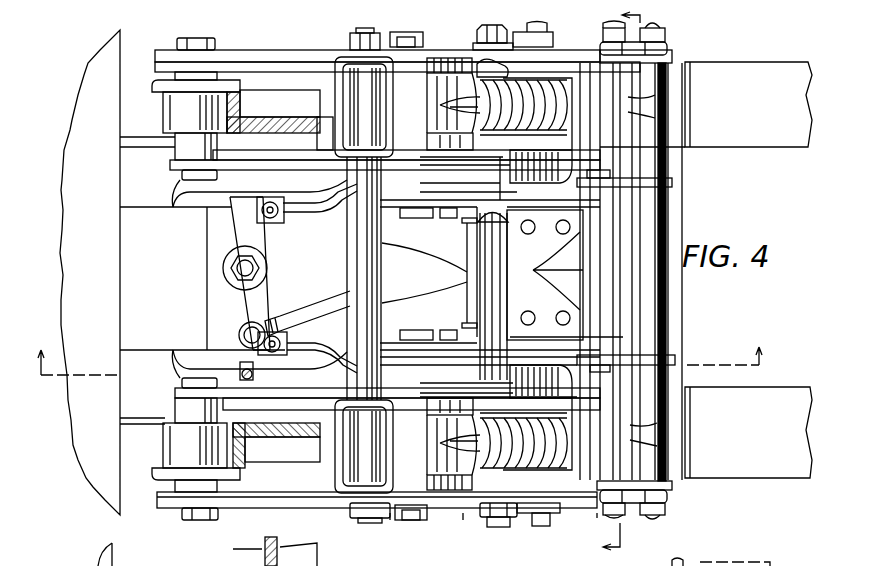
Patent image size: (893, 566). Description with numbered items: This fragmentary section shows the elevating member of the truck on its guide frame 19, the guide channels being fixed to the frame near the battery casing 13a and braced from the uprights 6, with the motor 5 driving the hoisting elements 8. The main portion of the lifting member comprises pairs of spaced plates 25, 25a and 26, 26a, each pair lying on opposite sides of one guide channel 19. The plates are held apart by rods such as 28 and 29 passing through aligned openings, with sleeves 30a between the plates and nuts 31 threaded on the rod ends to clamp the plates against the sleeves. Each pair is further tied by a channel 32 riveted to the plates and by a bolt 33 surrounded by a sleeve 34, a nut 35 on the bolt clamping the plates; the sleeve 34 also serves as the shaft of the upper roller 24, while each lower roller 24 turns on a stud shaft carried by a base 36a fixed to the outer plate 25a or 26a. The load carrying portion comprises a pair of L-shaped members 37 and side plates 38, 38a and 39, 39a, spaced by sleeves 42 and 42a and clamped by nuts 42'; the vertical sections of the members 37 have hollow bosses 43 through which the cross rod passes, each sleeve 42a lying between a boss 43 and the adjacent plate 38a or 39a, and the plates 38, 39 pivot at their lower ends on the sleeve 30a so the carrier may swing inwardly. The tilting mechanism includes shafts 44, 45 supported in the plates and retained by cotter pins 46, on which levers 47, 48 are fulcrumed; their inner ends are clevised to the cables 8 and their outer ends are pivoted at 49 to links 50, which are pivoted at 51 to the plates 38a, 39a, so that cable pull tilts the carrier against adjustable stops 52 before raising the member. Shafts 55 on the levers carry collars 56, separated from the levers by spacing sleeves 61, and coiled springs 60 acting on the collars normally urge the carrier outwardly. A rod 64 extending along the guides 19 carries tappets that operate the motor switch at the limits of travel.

The motor 5 is at (400, 351).
The uprights 6 is at (613, 281).
The hoisting elements 8 is at (284, 221).
The casing 13a is at (116, 511).
The guide frame 19 is at (255, 120).
The roller 24 is at (165, 106).
The plate 25 is at (298, 171).
The plate 25a is at (270, 54).
The plate 26 is at (284, 389).
The plate 26a is at (297, 509).
The rod 28 is at (380, 522).
The rod 29 is at (487, 26).
The sleeve 30a is at (352, 263).
The nut 31 is at (390, 521).
The channel 32 is at (336, 57).
The bolt 33 is at (190, 40).
The sleeve 34 is at (174, 152).
The nut 35 is at (178, 182).
The base 36a is at (300, 470).
The L-shaped member 37 is at (758, 148).
The side plate 38 is at (670, 62).
The side plate 38a is at (672, 181).
The side plate 39 is at (675, 488).
The side plate 39a is at (675, 357).
The sleeve 42 is at (639, 272).
The nut 42' is at (652, 279).
The sleeve 42a is at (667, 165).
The hollow boss 43 is at (665, 152).
The shaft 44 is at (422, 40).
The shaft 45 is at (403, 514).
The cotter pin 46 is at (410, 32).
The lever 47 is at (317, 214).
The lever 48 is at (330, 364).
The pivotal connection 49 is at (462, 223).
The link 50 is at (533, 229).
The pivotal connection 51 is at (577, 375).
The adjustable stop 52 is at (557, 35).
The shaft 55 is at (445, 58).
The collar 56 is at (467, 123).
The spring 60 is at (527, 78).
The spacing sleeve 61 is at (458, 150).
The rod 64 is at (245, 364).